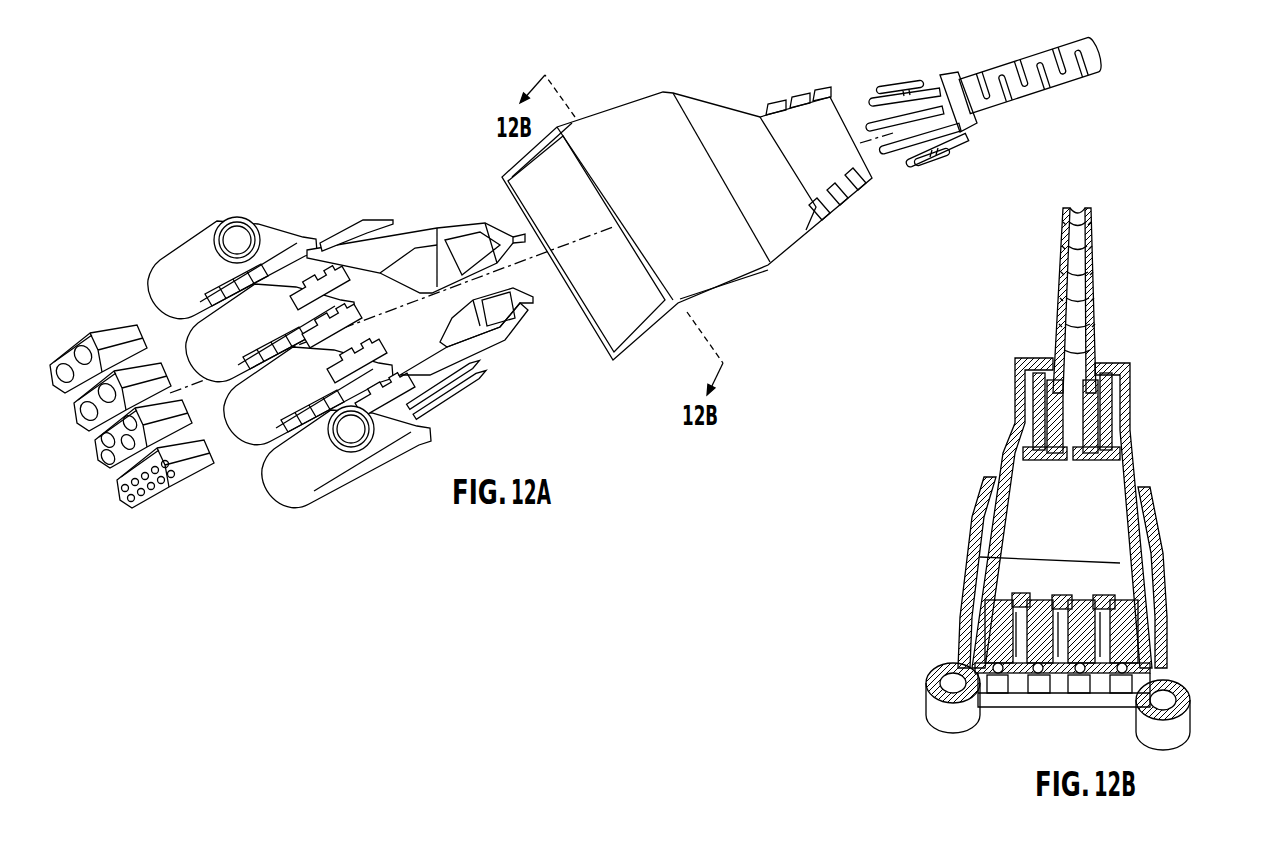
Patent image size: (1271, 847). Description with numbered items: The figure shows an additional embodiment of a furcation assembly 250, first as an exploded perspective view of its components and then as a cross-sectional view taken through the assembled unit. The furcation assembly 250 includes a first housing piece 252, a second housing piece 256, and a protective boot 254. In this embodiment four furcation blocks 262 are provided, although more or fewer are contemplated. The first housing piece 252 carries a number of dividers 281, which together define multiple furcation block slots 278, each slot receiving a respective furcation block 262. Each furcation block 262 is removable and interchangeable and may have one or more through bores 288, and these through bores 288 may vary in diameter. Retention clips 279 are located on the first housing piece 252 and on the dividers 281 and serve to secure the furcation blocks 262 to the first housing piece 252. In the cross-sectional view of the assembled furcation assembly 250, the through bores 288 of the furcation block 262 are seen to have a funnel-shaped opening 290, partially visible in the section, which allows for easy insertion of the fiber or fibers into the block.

In FIG. 12A, the furcation assembly 250 is at (268, 114).
In FIG. 12B, the furcation assembly 250 is at (903, 534).
In FIG. 12B, the first housing piece 252 is at (1184, 730).
In FIG. 12A, the protective boot 254 is at (980, 107).
In FIG. 12B, the protective boot 254 is at (1092, 347).
In FIG. 12A, the second housing piece 256 is at (718, 130).
In FIG. 12B, the second housing piece 256 is at (1158, 597).
In FIG. 12A, the furcation block 262 is at (163, 490).
In FIG. 12B, the furcation block 262 is at (1037, 674).
In FIG. 12A, the furcation block slot 278 is at (340, 420).
In FIG. 12A, the retention clip 279 is at (297, 241).
In FIG. 12A, the divider 281 is at (177, 272).
In FIG. 12B, the divider 281 is at (1020, 688).
In FIG. 12A, the through bore 288 is at (76, 418).
In FIG. 12B, the through bore 288 is at (968, 663).
In FIG. 12B, the funnel-shaped opening 290 is at (983, 616).